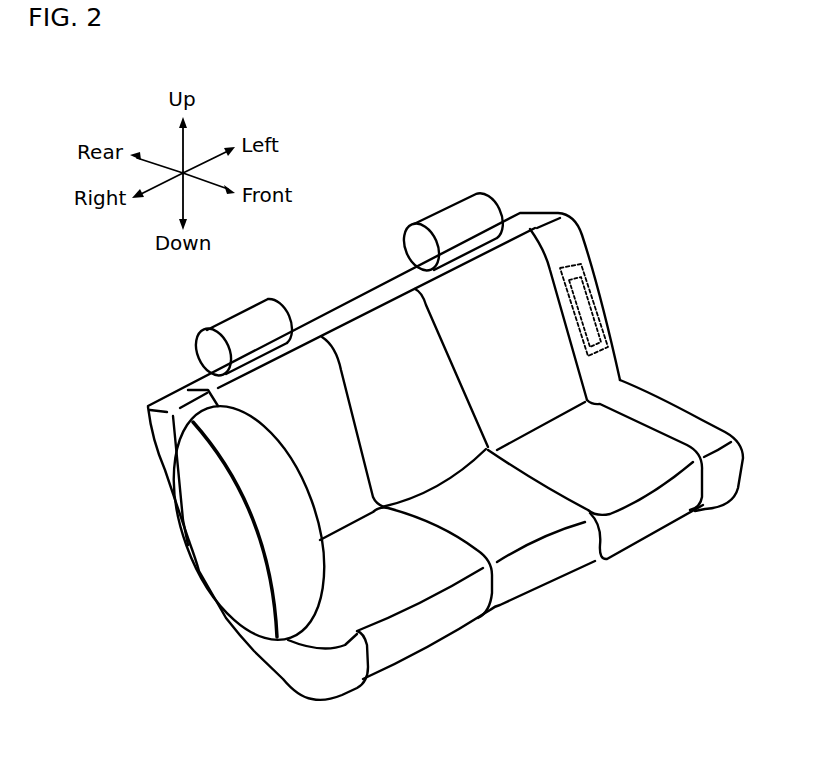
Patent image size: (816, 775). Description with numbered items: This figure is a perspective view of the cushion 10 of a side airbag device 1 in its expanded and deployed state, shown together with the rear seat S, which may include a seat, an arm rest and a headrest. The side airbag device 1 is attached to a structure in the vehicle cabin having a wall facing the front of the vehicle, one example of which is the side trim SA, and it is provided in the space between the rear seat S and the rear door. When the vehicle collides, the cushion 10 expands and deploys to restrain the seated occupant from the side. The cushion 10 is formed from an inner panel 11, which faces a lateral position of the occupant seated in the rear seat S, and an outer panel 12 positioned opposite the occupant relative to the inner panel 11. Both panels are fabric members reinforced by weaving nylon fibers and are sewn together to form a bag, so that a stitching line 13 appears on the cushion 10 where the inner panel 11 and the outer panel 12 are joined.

The rear seat S is at (553, 189).
The side trim SA is at (166, 429).
The side airbag device 1 is at (606, 300).
The cushion 10 is at (250, 632).
The inner panel 11 is at (290, 625).
The outer panel 12 is at (218, 578).
The stitching line 13 is at (247, 507).